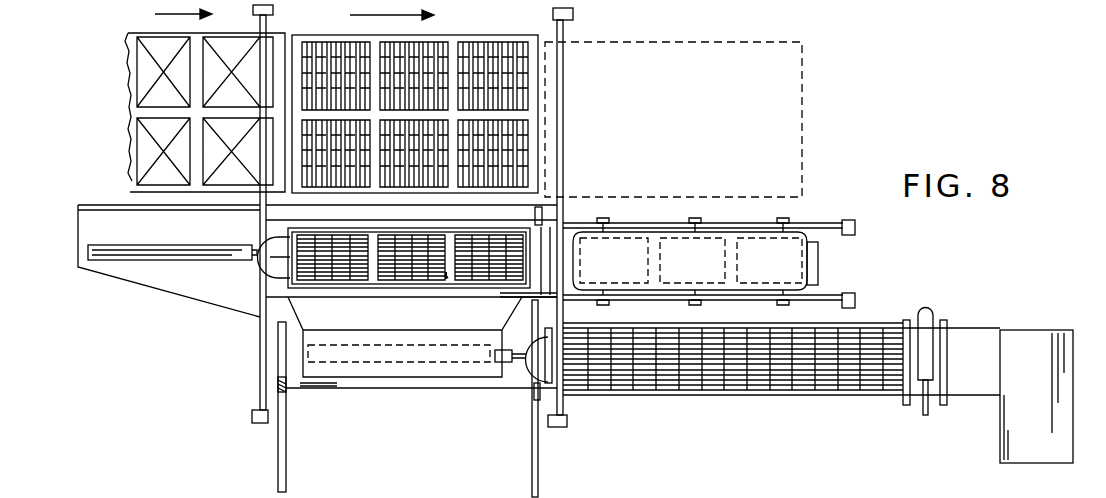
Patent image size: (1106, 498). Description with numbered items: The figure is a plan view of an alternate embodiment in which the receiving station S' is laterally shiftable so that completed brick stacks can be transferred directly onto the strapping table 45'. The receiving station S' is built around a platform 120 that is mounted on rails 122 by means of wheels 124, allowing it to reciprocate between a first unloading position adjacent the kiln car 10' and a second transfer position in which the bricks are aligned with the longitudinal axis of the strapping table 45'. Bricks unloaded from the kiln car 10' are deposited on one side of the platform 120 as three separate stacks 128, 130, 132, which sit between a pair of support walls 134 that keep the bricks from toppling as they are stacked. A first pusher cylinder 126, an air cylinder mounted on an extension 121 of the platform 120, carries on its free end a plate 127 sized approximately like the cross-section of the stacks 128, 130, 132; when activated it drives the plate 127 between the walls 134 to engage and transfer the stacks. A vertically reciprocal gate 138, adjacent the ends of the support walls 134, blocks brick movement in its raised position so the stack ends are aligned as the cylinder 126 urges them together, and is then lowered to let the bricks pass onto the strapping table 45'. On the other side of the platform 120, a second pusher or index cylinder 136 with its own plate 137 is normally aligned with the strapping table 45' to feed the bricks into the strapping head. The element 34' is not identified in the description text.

The kiln car 10' is at (415, 100).
The transfer carriage 34' is at (709, 255).
The strapping table 45' is at (818, 385).
The platform 120 is at (295, 346).
The extension 121 is at (154, 270).
The rails 122 is at (288, 452).
The wheels 124 is at (542, 212).
The first pusher cylinder 126 is at (131, 249).
The plate 127 is at (270, 240).
The stack 128 is at (320, 243).
The stack 130 is at (409, 268).
The stack 132 is at (479, 245).
The support walls 134 is at (388, 241).
The index cylinder 136 is at (373, 356).
The plate 137 is at (554, 367).
The gate 138 is at (548, 278).
The receiving station S' is at (460, 298).